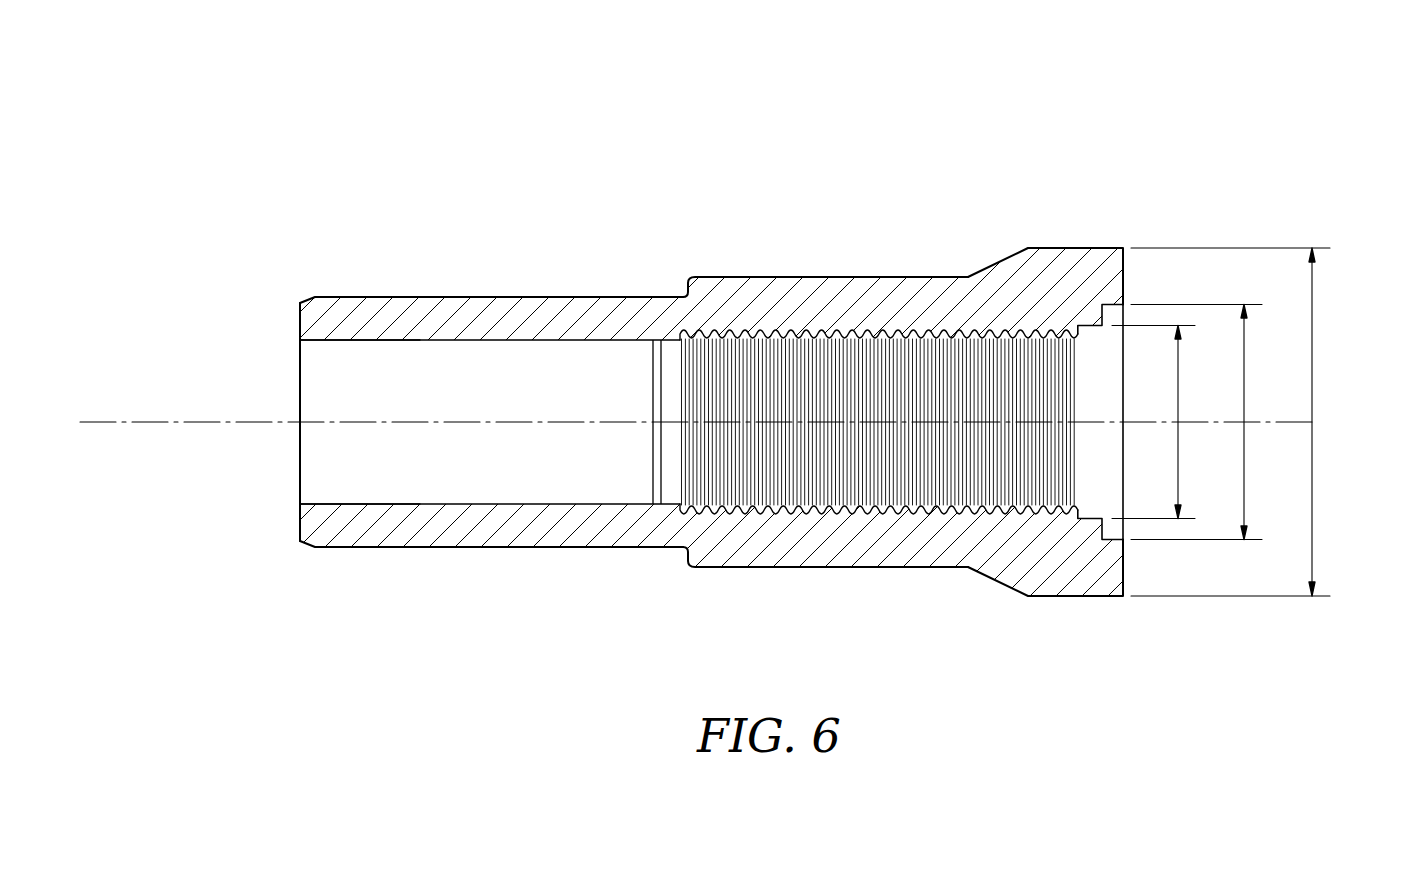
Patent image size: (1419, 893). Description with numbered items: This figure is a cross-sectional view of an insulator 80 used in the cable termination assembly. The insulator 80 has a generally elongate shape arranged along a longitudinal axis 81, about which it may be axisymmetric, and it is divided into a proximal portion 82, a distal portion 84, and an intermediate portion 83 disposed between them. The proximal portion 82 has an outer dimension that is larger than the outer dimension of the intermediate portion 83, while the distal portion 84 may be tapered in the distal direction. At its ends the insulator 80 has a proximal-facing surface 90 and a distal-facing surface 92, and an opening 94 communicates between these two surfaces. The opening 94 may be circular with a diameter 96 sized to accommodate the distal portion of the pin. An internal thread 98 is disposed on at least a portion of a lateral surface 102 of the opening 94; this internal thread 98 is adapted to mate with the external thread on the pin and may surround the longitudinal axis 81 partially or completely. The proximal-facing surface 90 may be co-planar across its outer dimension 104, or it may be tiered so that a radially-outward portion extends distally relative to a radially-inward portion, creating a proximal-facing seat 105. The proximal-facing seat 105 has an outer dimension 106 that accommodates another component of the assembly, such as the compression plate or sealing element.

The insulator 80 is at (432, 124).
The longitudinal axis 81 is at (200, 421).
The proximal portion 82 is at (1075, 247).
The intermediate portion 83 is at (830, 277).
The distal portion 84 is at (358, 297).
The proximal-facing surface 90 is at (1123, 568).
The distal-facing surface 92 is at (298, 513).
The opening 94 is at (270, 457).
The diameter 96 is at (1178, 384).
The internal thread 98 is at (690, 514).
The lateral surface 102 is at (425, 345).
The outer dimension 104 is at (1312, 384).
The proximal-facing seat 105 is at (1123, 311).
The outer dimension 106 is at (1244, 384).